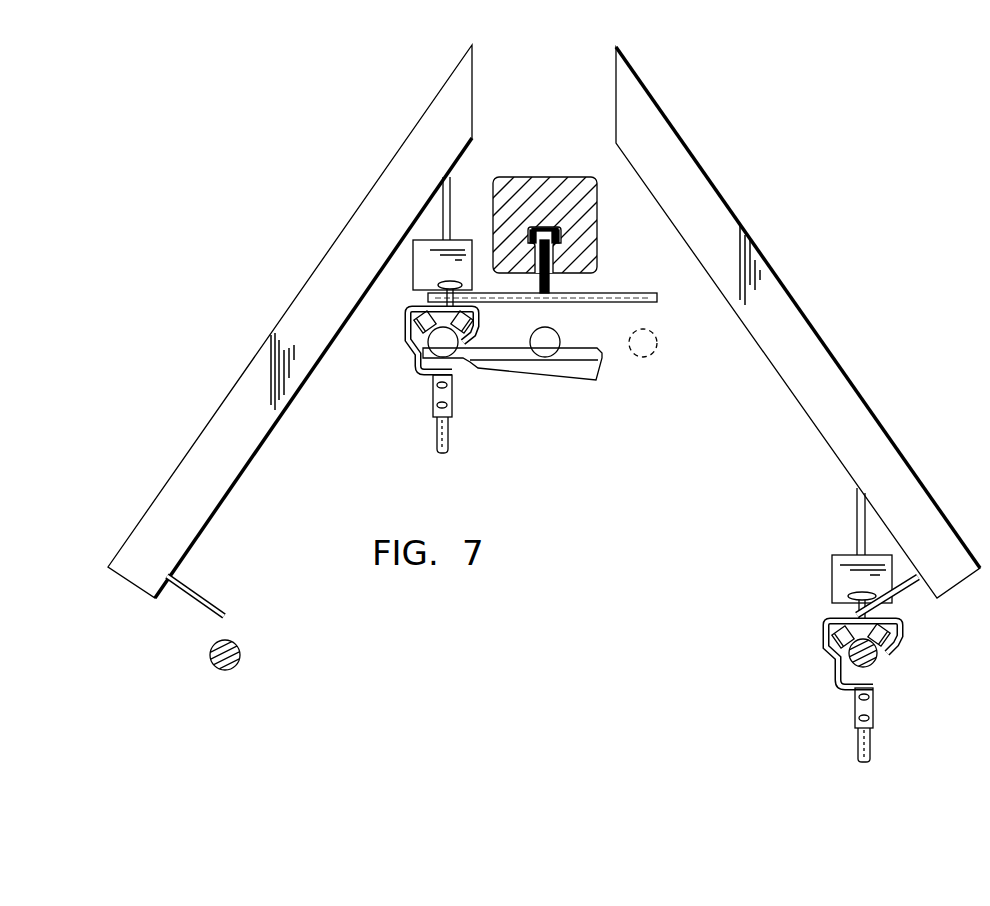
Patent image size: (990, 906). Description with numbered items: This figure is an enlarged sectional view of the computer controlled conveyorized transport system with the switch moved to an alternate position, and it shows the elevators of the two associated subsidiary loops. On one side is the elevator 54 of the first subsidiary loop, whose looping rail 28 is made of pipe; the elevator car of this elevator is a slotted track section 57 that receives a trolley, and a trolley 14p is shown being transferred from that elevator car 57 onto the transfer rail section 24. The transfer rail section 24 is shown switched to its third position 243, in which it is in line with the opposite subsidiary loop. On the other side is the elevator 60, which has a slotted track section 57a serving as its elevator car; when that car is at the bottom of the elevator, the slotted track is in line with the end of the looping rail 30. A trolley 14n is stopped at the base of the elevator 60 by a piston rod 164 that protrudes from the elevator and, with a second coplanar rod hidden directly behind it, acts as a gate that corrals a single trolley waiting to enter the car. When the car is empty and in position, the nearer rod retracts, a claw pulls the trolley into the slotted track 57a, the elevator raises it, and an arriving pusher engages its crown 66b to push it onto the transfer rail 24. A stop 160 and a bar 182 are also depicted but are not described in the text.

The elevator 54 is at (245, 455).
The elevator 60 is at (814, 425).
The slotted track section 57 is at (428, 268).
The bar 182 is at (620, 293).
The transfer rail section 24 is at (440, 340).
The transfer rail position 243 is at (657, 338).
The trolley 14p is at (425, 372).
The slotted track section 57a is at (865, 562).
The crown 66b is at (855, 598).
The piston rod 164 is at (905, 588).
The clamp 160 is at (837, 675).
The looping rail 30 is at (875, 657).
The trolley 14n is at (872, 748).
The looping rail 28 is at (236, 660).